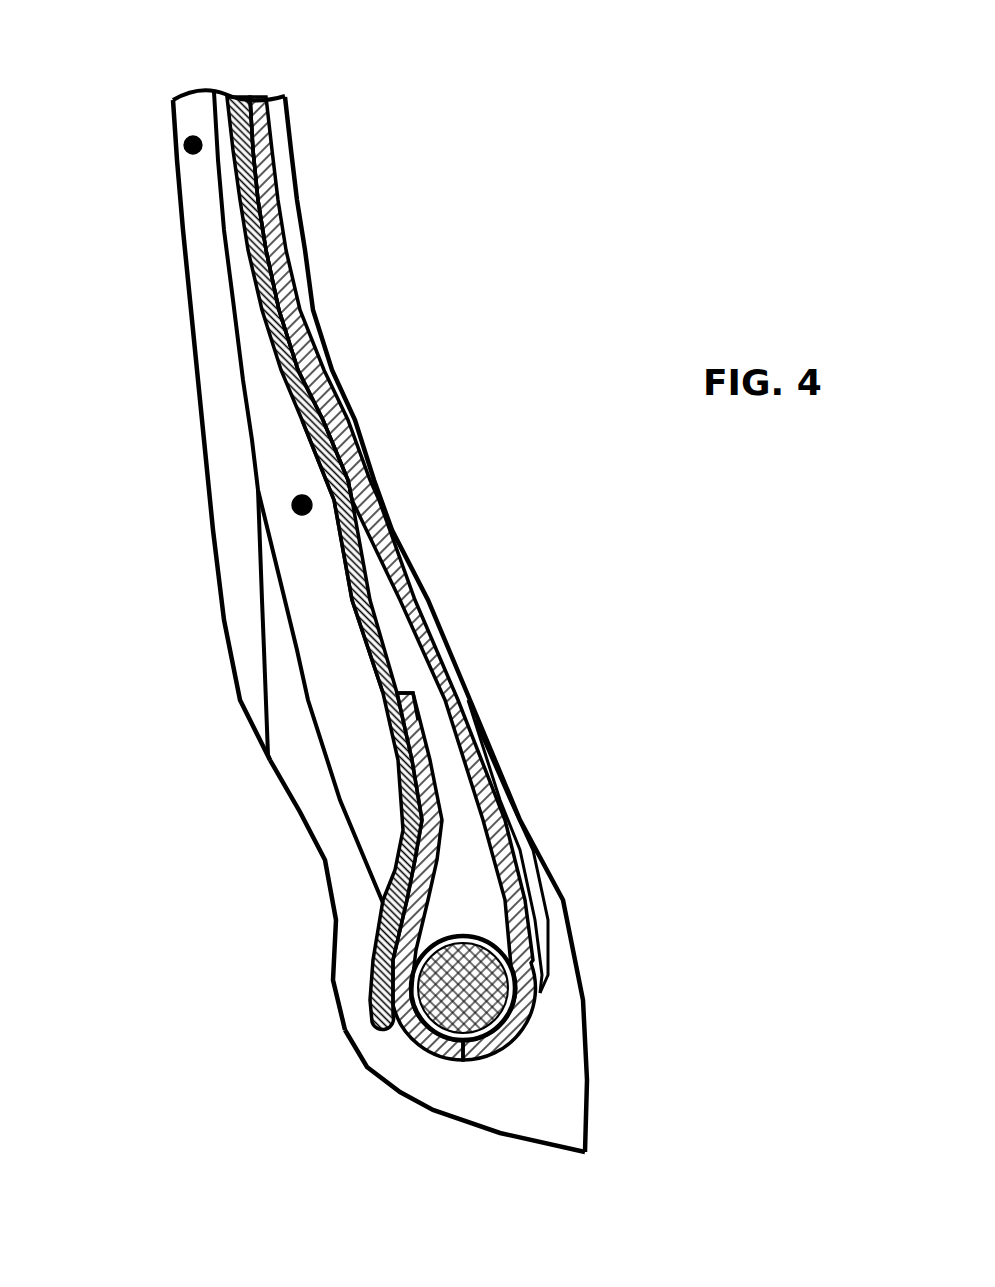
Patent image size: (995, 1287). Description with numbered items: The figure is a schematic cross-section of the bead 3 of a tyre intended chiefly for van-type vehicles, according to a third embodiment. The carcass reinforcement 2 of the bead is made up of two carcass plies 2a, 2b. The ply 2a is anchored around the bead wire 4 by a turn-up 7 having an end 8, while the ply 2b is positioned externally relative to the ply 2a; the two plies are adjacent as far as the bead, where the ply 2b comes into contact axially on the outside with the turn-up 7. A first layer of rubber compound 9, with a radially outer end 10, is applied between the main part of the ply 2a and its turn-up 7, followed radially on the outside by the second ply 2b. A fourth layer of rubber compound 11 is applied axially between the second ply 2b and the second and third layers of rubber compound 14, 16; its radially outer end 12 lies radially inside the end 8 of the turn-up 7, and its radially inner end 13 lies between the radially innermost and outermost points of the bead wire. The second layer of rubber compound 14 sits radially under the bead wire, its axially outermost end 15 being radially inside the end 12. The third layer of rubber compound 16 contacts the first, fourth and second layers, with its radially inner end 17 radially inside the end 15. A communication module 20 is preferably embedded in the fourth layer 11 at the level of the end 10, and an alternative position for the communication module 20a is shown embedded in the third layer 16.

The carcass reinforcement 2 is at (268, 228).
The carcass ply 2a is at (310, 343).
The carcass ply 2b is at (355, 597).
The bead 3 is at (548, 581).
The bead wire 4 is at (462, 975).
The turn-up 7 is at (432, 800).
The end of the turn-up 8 is at (400, 692).
The first layer of rubber compound 9 is at (473, 862).
The radially outer end of the first layer of rubber compound 10 is at (357, 510).
The fourth layer of rubber compound 11 is at (337, 603).
The radially outer end of the fourth layer of rubber compound 12 is at (221, 78).
The radially inner end of the fourth layer of rubber compound 13 is at (378, 906).
The second layer of rubber compound 14 is at (408, 1066).
The axially outermost end of the second layer of rubber compound 15 is at (262, 485).
The third layer of rubber compound 16 is at (210, 348).
The radially inner end of the third layer of rubber compound 17 is at (262, 755).
The communication module 20 is at (292, 508).
The communication module 20a is at (184, 144).